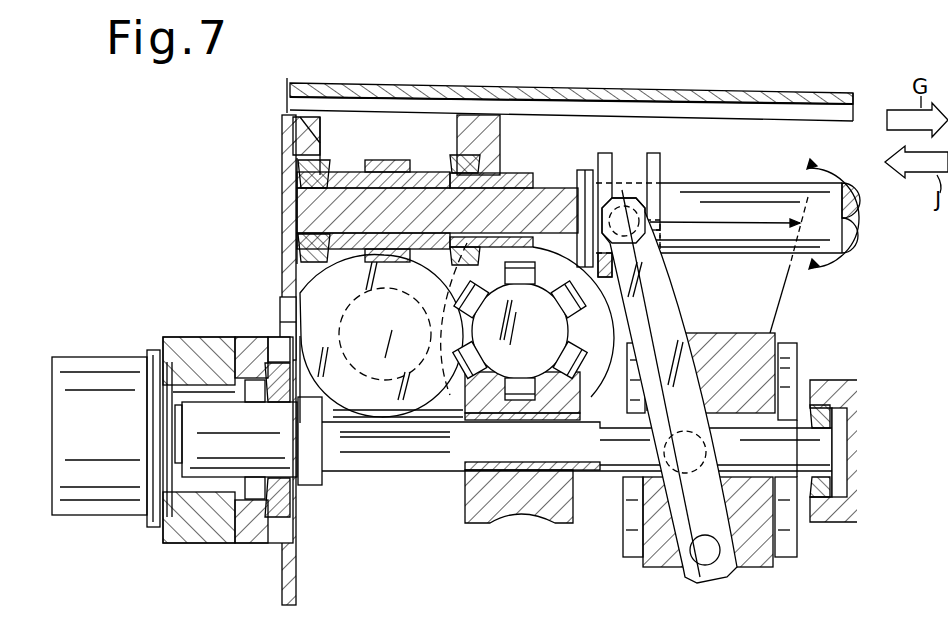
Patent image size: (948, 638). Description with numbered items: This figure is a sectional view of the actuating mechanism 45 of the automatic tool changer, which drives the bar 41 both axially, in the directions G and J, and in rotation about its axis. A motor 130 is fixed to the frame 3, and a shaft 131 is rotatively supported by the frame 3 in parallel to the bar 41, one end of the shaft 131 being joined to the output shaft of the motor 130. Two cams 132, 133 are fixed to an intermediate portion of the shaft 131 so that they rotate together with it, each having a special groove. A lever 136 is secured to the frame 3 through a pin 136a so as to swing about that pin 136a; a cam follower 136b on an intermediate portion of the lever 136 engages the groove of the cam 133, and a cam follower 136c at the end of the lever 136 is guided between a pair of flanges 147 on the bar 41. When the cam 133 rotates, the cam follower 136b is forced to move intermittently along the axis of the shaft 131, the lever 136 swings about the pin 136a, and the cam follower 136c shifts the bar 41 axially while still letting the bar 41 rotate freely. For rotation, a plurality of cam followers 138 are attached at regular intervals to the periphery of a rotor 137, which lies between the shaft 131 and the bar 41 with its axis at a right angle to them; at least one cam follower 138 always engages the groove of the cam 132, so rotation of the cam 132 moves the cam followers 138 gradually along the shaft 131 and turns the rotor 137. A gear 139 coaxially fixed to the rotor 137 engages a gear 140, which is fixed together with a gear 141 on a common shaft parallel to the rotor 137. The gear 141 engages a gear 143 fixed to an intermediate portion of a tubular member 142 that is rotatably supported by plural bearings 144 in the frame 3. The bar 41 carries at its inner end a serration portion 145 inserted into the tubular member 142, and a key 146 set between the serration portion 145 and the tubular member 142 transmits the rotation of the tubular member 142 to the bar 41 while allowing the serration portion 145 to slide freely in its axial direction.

The frame 3 is at (740, 96).
The bar 41 is at (772, 185).
The actuating mechanism 45 is at (276, 211).
The motor 130 is at (105, 516).
The shaft 131 is at (372, 472).
The cam 132 is at (517, 505).
The cam 133 is at (742, 558).
The lever 136 is at (700, 340).
The pin 136a is at (698, 565).
The cam follower 136b is at (666, 452).
The cam follower 136c is at (638, 200).
The rotor 137 is at (610, 318).
The cam followers 138 is at (577, 372).
The gear 139 is at (640, 330).
The gear 140 is at (300, 333).
The gear 141 is at (296, 312).
The tubular member 142 is at (420, 172).
The gear 143 is at (367, 160).
The bearings 144 is at (298, 174).
The serration portion 145 is at (573, 197).
The key 146 is at (513, 188).
The flanges 147 is at (604, 153).